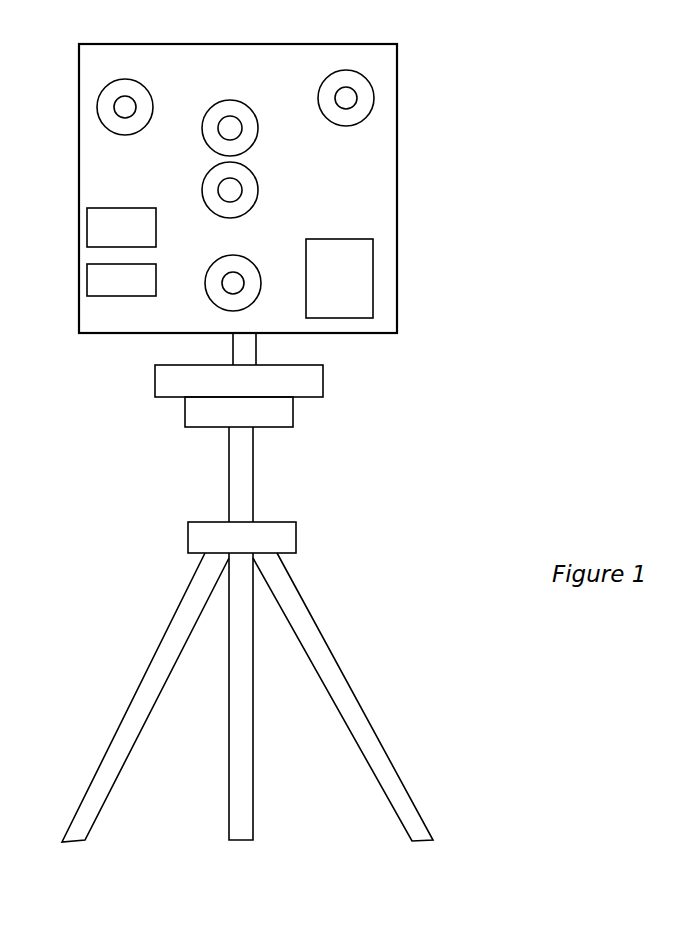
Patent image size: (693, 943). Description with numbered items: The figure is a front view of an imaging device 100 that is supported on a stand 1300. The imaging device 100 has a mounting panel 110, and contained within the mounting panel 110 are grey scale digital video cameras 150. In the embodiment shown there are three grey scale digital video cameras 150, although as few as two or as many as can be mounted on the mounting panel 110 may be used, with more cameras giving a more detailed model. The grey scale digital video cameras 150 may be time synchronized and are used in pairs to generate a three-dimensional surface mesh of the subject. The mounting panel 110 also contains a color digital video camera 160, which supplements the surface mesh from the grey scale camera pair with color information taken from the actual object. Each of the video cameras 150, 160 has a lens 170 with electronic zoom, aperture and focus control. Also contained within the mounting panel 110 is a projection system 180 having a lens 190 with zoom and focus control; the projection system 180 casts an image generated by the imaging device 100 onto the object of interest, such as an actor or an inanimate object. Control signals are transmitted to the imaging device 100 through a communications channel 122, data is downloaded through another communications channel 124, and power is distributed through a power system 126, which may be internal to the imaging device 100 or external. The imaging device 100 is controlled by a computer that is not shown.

The imaging device 100 is at (423, 55).
The mounting panel 110 is at (327, 208).
The communications channel 122 is at (122, 227).
The communications channel 124 is at (122, 280).
The power system 126 is at (339, 278).
The grey scale digital video cameras 150 is at (123, 78).
The color digital video camera 160 is at (238, 98).
The lenses 170 is at (115, 107).
The projection system 180 is at (215, 175).
The lens 190 is at (222, 190).
The stand 1300 is at (253, 488).